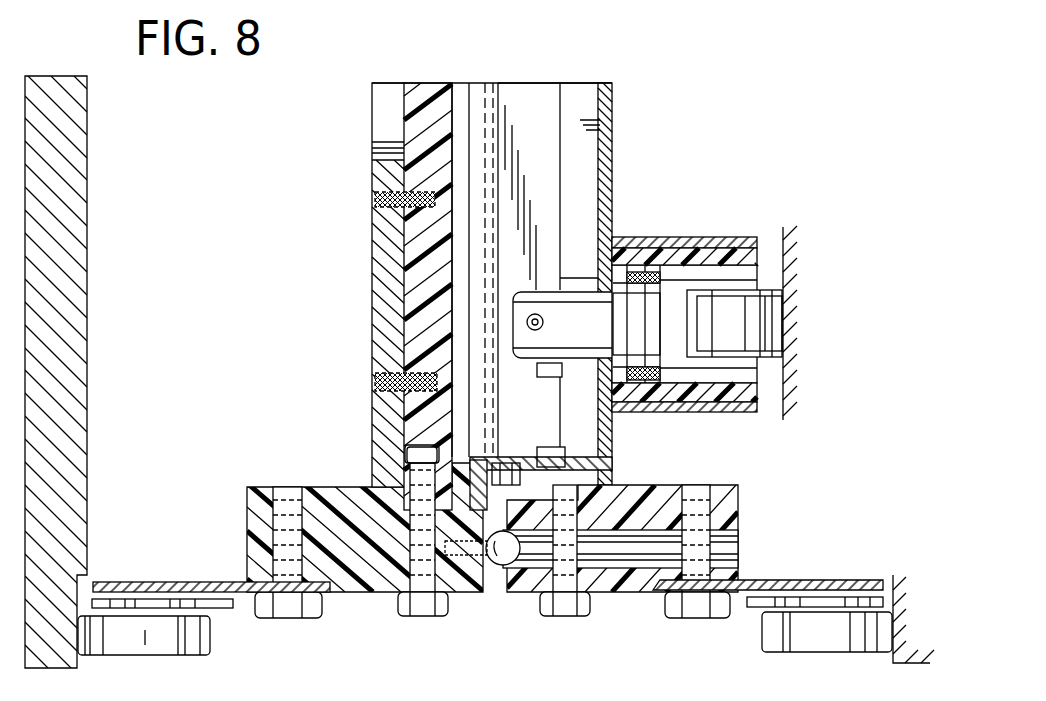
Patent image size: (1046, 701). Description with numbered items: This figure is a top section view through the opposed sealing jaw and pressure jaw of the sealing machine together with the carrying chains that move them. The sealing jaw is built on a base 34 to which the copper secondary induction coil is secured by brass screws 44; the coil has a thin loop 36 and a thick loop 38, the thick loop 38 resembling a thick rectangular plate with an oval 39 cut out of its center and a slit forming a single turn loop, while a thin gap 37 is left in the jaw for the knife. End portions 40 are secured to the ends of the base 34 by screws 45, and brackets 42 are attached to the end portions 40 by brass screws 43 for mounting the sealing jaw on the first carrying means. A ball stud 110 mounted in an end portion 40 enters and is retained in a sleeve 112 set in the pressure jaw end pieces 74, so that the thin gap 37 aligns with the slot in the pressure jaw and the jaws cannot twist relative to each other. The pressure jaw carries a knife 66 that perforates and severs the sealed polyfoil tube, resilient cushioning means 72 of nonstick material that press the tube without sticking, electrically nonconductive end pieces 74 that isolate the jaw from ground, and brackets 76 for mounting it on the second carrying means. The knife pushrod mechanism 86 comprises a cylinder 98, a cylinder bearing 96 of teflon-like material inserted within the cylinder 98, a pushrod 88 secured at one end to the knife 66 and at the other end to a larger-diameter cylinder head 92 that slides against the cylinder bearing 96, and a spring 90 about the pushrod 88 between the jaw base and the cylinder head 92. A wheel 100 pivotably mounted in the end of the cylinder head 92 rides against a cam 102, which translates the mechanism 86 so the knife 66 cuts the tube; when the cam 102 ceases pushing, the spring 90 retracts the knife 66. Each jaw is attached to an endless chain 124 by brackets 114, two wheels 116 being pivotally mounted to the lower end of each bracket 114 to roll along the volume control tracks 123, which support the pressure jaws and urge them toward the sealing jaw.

The base 34 is at (420, 90).
The thin loop 36 is at (410, 458).
The thin gap 37 is at (470, 372).
The thick loop 38 is at (378, 292).
The oval 39 is at (385, 130).
The end portions 40 is at (345, 487).
The brackets 42 is at (245, 595).
The brass screws 43 is at (296, 620).
The brass screws 44 is at (385, 172).
The screws 45 is at (427, 618).
The knife 66 is at (548, 117).
The cushioning means 72 is at (512, 463).
The end pieces 74 is at (668, 470).
The brackets 76 is at (823, 582).
The knife pushrod mechanism 86 is at (720, 202).
The pushrod 88 is at (584, 298).
The spring 90 is at (645, 270).
The cylinder head 92 is at (700, 368).
The cylinder bearing 96 is at (710, 255).
The cylinder 98 is at (744, 237).
The wheel 100 is at (770, 310).
The cam 102 is at (788, 332).
The ball stud 110 is at (497, 566).
The sleeve 112 is at (738, 548).
The brackets 114 is at (232, 583).
The wheels 116 is at (147, 652).
The volume control tracks 123 is at (893, 662).
The endless chains 124 is at (78, 78).